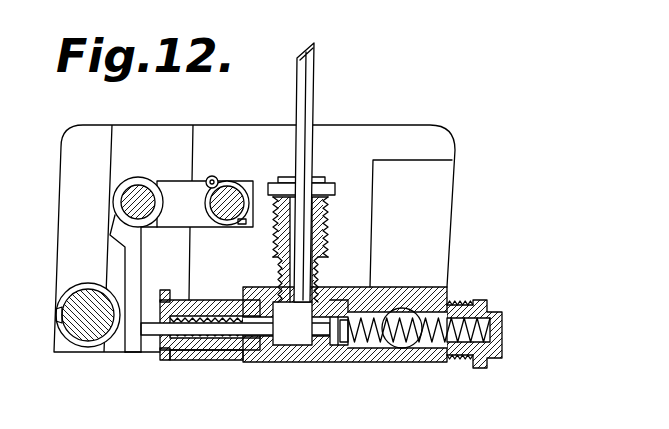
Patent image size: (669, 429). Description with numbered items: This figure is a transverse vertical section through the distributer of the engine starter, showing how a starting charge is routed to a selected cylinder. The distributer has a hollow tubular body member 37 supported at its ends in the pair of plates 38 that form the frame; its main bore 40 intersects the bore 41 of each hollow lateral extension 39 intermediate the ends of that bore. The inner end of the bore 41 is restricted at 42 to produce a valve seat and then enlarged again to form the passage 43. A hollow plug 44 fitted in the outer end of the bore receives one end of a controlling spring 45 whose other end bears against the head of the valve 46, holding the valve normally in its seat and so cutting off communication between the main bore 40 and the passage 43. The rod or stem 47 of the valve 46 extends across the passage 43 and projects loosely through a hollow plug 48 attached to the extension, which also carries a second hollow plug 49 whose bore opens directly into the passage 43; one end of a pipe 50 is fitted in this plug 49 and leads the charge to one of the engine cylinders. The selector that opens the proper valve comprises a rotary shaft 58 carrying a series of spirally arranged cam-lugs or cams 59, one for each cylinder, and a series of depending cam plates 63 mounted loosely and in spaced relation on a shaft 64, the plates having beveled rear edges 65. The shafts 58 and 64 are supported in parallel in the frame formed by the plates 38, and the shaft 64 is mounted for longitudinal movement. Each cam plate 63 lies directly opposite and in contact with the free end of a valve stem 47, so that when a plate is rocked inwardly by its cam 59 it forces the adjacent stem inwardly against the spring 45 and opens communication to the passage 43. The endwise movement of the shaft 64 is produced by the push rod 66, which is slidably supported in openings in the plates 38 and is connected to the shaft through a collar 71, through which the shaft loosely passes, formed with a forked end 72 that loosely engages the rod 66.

The tubular body member 37 is at (443, 292).
The plates 38 is at (383, 133).
The hollow lateral extensions 39 is at (337, 297).
The bore 40 is at (400, 309).
The bore 41 is at (370, 338).
The restricted portion 42 is at (317, 340).
The passage 43 is at (282, 347).
The hollow plug 44 is at (495, 304).
The controlling spring 45 is at (487, 328).
The valve 46 is at (338, 345).
The valve stem 47 is at (212, 326).
The hollow plug 48 is at (225, 298).
The second hollow plug 49 is at (276, 266).
The pipe 50 is at (315, 60).
The shaft 58 is at (95, 330).
The cams 59 is at (56, 315).
The cam plates 63 is at (142, 250).
The shaft 64 is at (133, 200).
The beveled rear edges 65 is at (132, 265).
The push rod 66 is at (225, 198).
The collar 71 is at (212, 176).
The forked end 72 is at (168, 184).